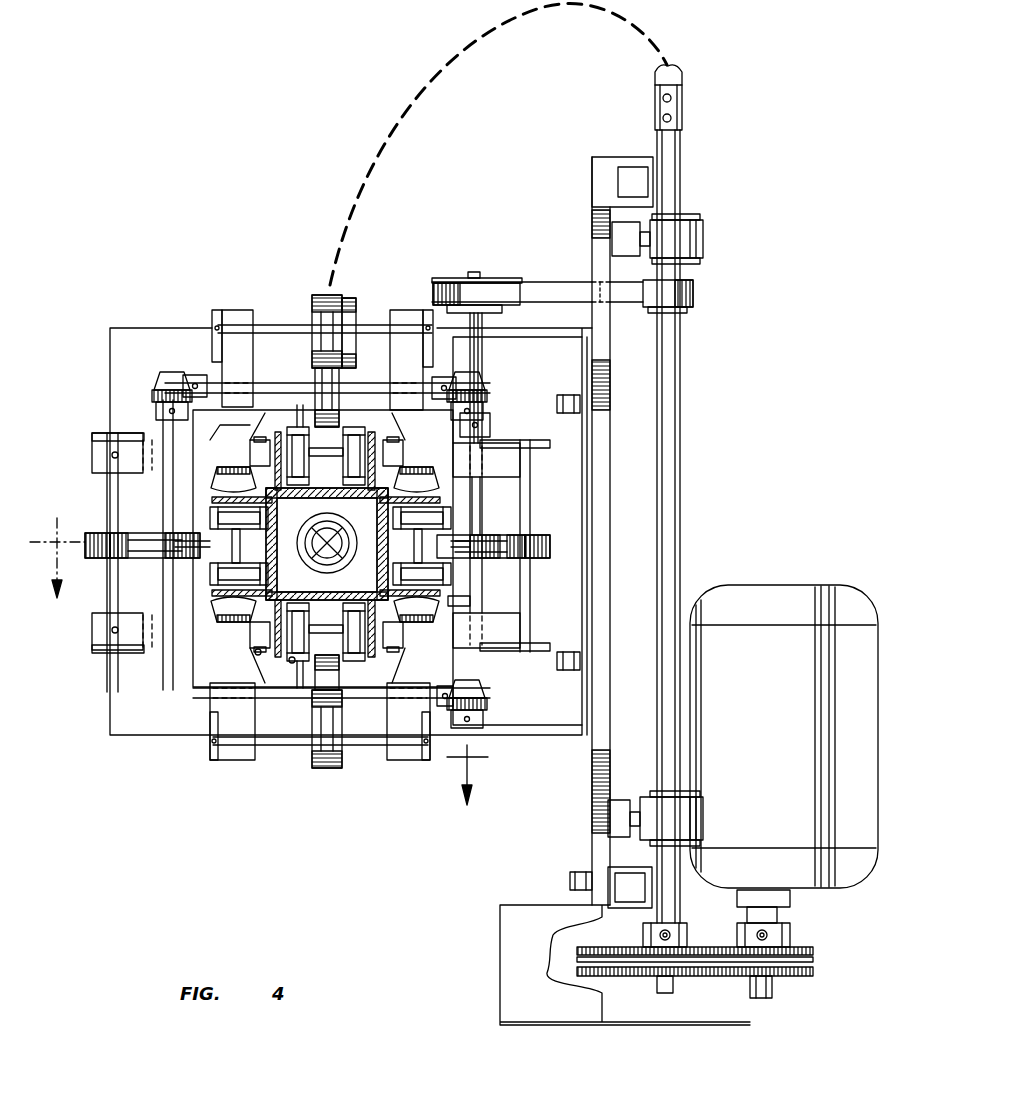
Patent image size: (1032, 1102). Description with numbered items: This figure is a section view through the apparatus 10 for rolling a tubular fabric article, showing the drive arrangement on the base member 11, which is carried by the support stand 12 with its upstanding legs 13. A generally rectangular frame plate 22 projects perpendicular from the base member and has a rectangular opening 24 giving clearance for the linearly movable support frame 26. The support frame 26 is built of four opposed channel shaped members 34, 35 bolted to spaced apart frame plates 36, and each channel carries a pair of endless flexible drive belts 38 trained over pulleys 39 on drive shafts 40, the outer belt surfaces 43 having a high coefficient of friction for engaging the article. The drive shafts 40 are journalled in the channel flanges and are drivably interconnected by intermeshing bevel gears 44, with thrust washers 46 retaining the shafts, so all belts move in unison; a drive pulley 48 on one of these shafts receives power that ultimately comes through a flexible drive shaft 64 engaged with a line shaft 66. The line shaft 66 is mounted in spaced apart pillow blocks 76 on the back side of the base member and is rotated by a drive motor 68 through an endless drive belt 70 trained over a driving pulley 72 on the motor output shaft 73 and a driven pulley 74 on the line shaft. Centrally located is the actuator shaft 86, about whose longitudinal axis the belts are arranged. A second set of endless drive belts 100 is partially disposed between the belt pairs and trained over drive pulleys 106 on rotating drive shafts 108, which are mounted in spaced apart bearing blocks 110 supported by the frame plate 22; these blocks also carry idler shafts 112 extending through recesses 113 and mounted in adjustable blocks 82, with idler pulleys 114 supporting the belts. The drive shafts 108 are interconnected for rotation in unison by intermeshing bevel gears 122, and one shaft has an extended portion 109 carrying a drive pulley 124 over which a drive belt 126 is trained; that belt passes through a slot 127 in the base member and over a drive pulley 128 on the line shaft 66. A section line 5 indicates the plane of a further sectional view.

The section line 5- 5 is at (259, 661).
The apparatus 10 is at (330, 210).
The base member 11 is at (592, 163).
The support stand 12 is at (641, 155).
The upstanding legs 13 is at (618, 192).
The frame plate 22 is at (160, 725).
The rectangular opening 24 is at (192, 632).
The support frame 26 is at (470, 600).
The channel shaped member 34 is at (270, 420).
The channel shaped member 35 is at (482, 505).
The frame plates 36 is at (256, 655).
The drive belts 38 is at (291, 661).
The pulleys 39 is at (380, 436).
The drive shafts 40 is at (343, 470).
The outer belt surfaces 43 is at (300, 415).
The bevel gears 44 is at (240, 470).
The thrust washers 46 is at (250, 448).
The drive pulley 48 is at (268, 555).
The flexible drive shaft 64 is at (684, 78).
The line shaft 66 is at (682, 375).
The drive motor 68 is at (750, 595).
The drive belt 70 is at (815, 960).
The driving pulley 72 is at (795, 947).
The output shaft 73 is at (773, 992).
The driven pulley 74 is at (712, 975).
The pillow blocks 76 is at (705, 245).
The adjustable blocks 82 is at (212, 315).
The actuator shaft 86 is at (340, 522).
The drive belts 100 is at (325, 300).
The drive pulleys 106 is at (340, 372).
The drive shafts 108 is at (280, 383).
The extended portion 109 is at (482, 332).
The bearing blocks 110 is at (228, 365).
The idler shafts 112 is at (272, 325).
The recesses 113 is at (118, 457).
The idler pulleys 114 is at (350, 300).
The bevel gears 122 is at (170, 390).
The drive pulley 124 is at (498, 280).
The drive belt 126 is at (560, 290).
The slot 127 is at (606, 310).
The drive pulley 128 is at (695, 282).